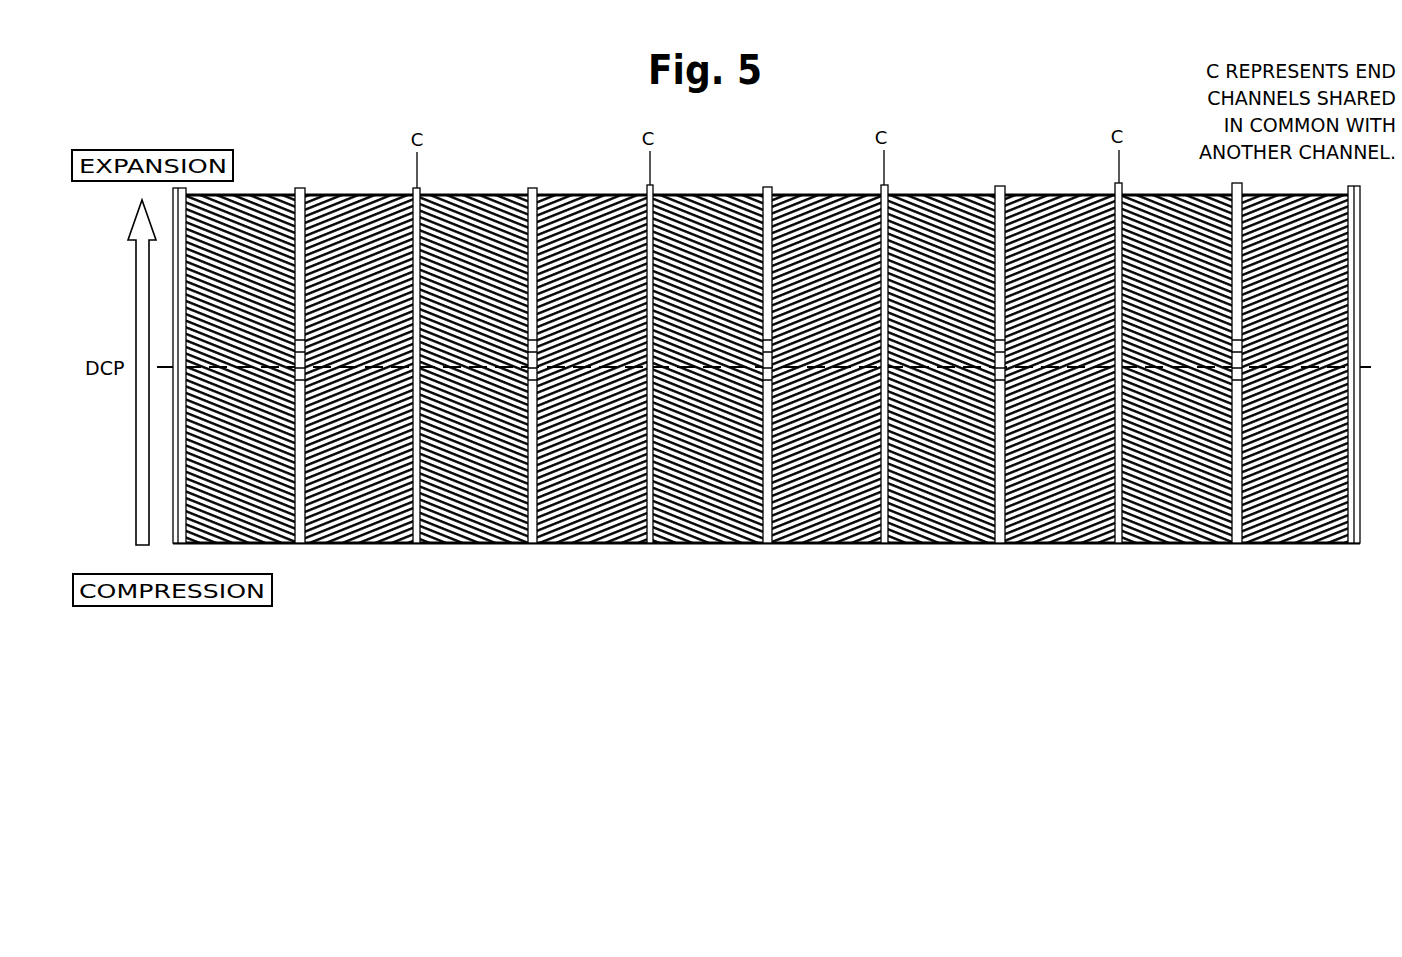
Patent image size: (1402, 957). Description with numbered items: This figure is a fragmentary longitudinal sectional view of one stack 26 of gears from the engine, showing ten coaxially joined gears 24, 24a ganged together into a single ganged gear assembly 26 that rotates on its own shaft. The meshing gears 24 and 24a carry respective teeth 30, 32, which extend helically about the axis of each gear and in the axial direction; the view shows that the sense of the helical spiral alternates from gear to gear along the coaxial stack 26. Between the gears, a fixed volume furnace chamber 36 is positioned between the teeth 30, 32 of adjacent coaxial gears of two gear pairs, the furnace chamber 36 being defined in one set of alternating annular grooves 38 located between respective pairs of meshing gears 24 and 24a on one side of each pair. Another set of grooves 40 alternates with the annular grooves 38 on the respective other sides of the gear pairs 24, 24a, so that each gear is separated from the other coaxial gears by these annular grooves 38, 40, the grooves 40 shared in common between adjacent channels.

The gear 24 is at (353, 219).
The gear 24a is at (372, 522).
The stack of coaxially joined gears 26 is at (672, 543).
The teeth 30 is at (812, 200).
The teeth 32 is at (862, 522).
The furnace chamber 36 is at (306, 373).
The annular grooves 38 is at (527, 193).
The grooves 40 is at (655, 195).